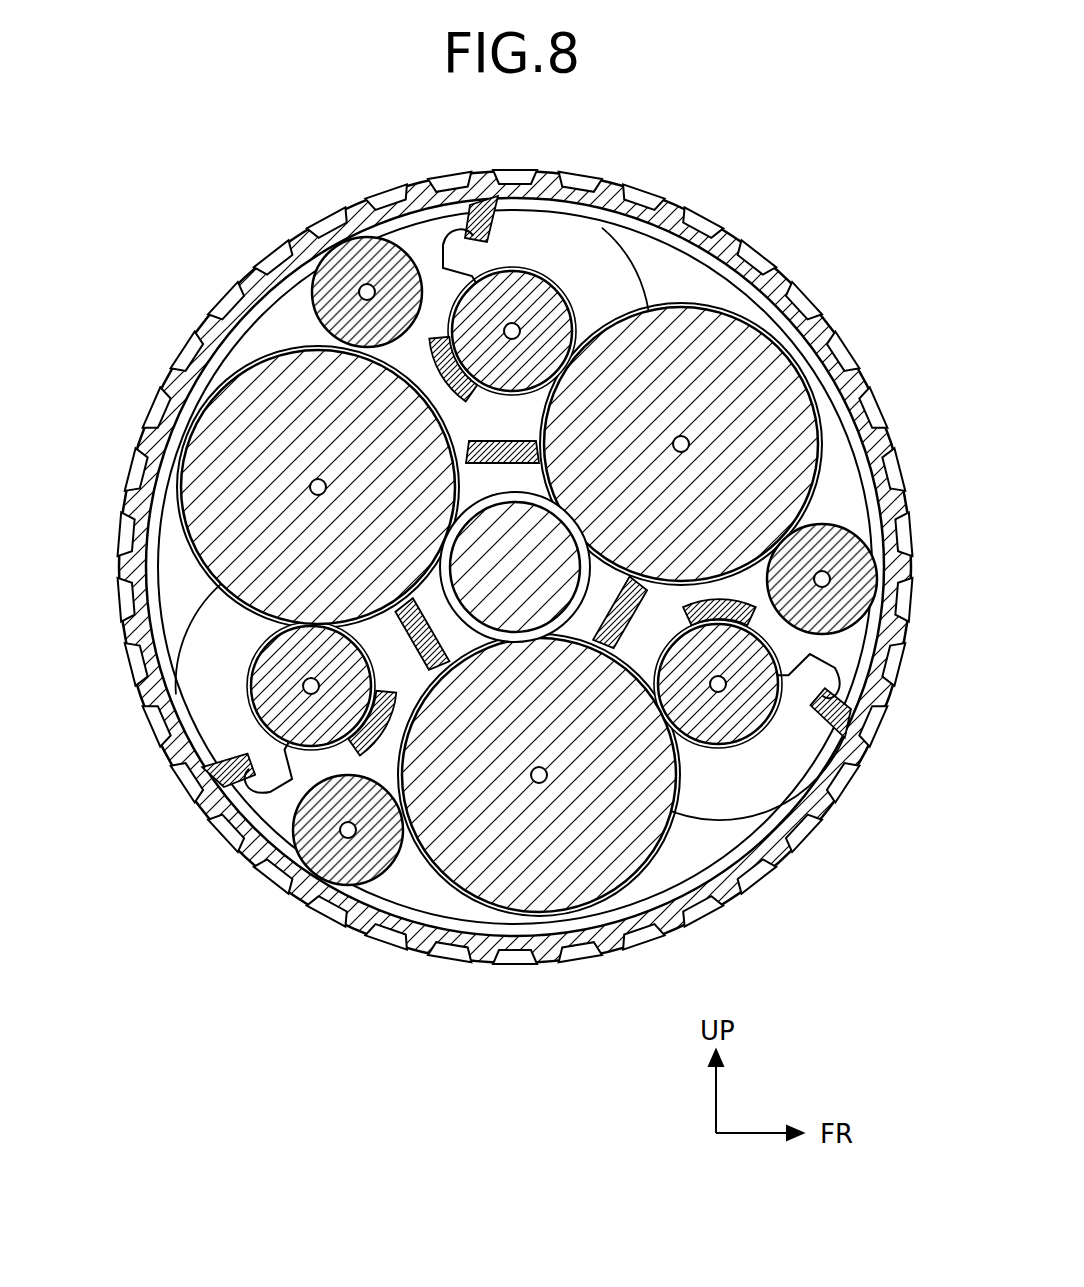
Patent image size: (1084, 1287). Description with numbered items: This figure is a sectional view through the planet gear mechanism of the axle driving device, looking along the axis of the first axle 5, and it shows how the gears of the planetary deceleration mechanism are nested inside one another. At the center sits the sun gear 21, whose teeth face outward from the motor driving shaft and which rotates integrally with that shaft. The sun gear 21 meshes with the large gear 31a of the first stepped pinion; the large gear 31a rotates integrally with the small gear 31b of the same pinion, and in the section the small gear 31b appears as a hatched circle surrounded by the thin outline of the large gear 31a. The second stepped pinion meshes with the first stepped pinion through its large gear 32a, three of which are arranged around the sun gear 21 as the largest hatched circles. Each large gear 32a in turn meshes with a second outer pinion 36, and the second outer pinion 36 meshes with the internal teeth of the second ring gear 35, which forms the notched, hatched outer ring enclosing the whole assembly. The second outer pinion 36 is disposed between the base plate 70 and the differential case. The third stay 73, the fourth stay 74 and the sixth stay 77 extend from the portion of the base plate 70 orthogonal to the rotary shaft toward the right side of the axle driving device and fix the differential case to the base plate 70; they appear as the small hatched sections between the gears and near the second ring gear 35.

The first axle 5 is at (522, 580).
The sun gear 21 is at (598, 572).
The large gear 31a is at (250, 650).
The small gear 31b is at (522, 290).
The large gear 32a is at (344, 420).
The second ring gear 35 is at (745, 245).
The second outer pinion 36 is at (331, 247).
The base plate 70 is at (630, 653).
The third stay 73 is at (440, 335).
The fourth stay 74 is at (522, 425).
The sixth stay 77 is at (490, 197).